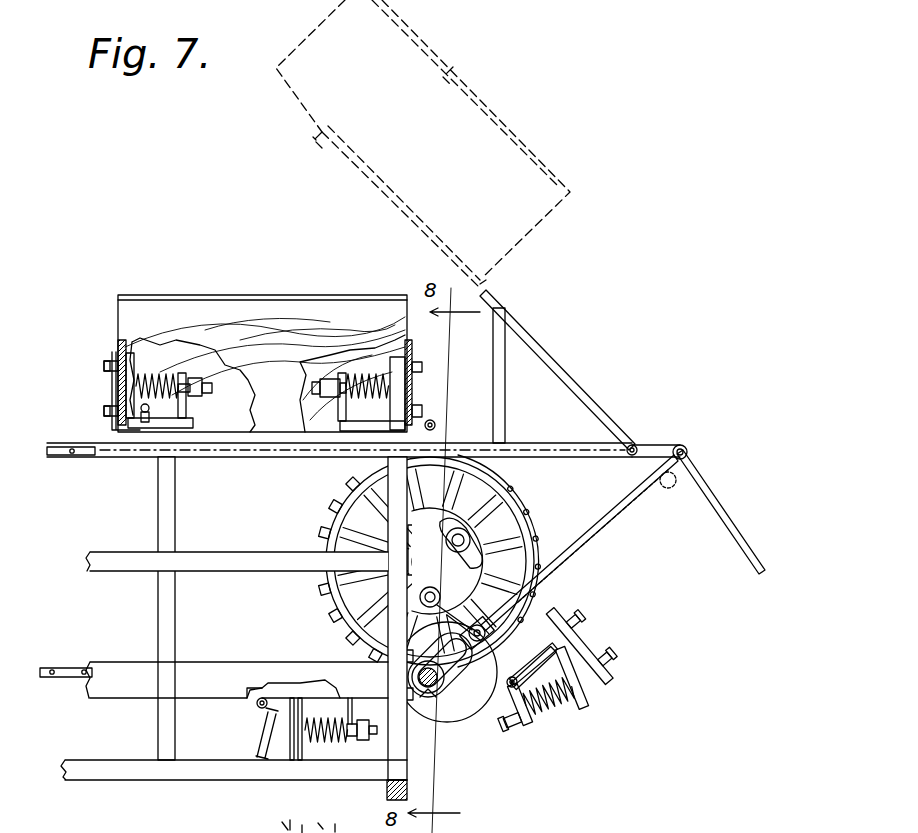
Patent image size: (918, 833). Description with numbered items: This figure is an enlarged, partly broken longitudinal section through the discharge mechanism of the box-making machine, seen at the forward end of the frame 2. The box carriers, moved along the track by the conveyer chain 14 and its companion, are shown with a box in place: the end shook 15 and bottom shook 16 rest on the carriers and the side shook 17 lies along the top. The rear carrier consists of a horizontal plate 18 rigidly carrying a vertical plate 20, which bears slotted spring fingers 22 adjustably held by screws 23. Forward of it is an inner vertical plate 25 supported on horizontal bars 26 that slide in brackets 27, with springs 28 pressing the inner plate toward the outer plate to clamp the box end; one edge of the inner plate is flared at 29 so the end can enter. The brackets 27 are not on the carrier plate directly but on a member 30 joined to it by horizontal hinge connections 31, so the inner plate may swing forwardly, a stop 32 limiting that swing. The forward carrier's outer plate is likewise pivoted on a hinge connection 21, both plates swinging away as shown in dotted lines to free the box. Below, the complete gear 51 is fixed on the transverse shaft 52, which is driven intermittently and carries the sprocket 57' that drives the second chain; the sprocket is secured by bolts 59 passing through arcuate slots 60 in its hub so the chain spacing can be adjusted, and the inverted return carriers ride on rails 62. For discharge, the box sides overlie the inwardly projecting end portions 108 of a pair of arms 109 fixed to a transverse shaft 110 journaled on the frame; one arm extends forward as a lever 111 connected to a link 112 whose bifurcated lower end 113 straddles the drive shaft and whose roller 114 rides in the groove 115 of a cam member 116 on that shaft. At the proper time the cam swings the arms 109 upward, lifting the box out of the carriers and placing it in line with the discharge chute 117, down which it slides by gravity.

The frame 2 is at (158, 598).
The conveyer chain 14 is at (66, 456).
The end shook 15 is at (118, 345).
The bottom shook 16 is at (465, 70).
The side shook 17 is at (475, 164).
The horizontal plate 18 is at (150, 432).
The vertical plate 20 is at (118, 395).
The horizontal hinge connection 21 is at (436, 425).
The spring finger 22 is at (120, 365).
The screw 23 is at (104, 366).
The inner vertical plate 25 is at (168, 418).
The horizontal bar 26 is at (170, 386).
The bracket 27 is at (213, 392).
The spring 28 is at (182, 378).
The flared edge 29 is at (110, 412).
The member 30 is at (175, 477).
The horizontal hinge connection 31 is at (200, 442).
The stop 32 is at (95, 457).
The complete gear 51 is at (324, 824).
The transverse shaft 52 is at (418, 560).
The sprocket 57' is at (513, 561).
The bolt 59 is at (460, 528).
The arcuate slot 60 is at (482, 550).
The rail 62 is at (237, 680).
The inwardly projecting end portion 108 is at (266, 447).
The arm 109 is at (335, 168).
The transverse shaft 110 is at (636, 444).
The lever 111 is at (684, 448).
The link 112 is at (612, 520).
The bifurcated lower end 113 is at (470, 705).
The roller 114 is at (468, 561).
The groove 115 is at (522, 723).
The cam member 116 is at (355, 648).
The discharge chute 117 is at (545, 352).